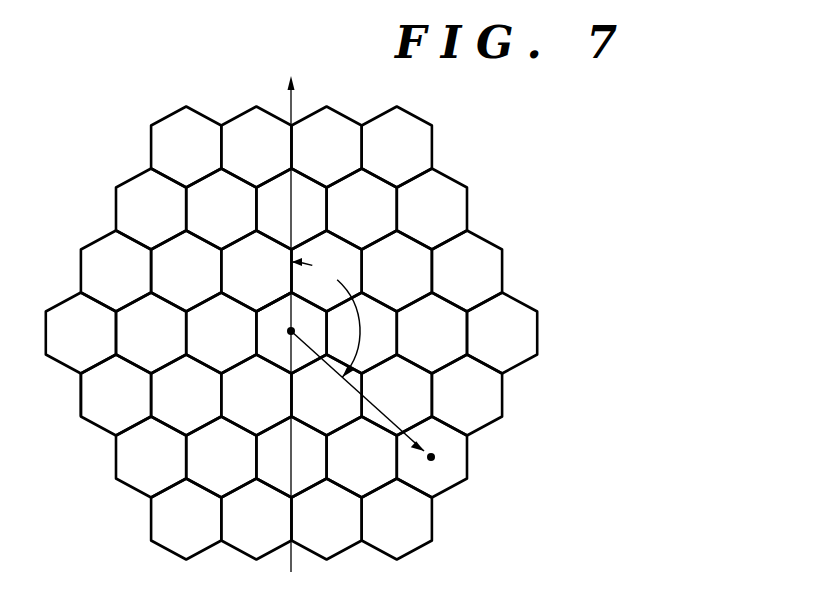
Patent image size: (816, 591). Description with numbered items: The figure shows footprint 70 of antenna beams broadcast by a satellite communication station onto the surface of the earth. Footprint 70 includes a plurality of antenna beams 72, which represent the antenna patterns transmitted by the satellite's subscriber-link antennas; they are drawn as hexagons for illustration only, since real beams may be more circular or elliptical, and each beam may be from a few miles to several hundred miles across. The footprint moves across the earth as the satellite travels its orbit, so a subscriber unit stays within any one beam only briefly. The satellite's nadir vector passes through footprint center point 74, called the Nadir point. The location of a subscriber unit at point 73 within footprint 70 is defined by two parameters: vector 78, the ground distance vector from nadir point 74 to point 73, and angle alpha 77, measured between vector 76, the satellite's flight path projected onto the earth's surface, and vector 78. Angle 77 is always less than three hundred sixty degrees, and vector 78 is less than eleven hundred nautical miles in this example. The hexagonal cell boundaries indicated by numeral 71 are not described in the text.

The footprint 70 is at (485, 239).
The hexagonal cell boundaries 71 is at (278, 310).
The antenna beams 72 is at (92, 397).
The point 73 is at (436, 458).
The nadir point 74 is at (283, 327).
The vector 76 is at (289, 103).
The angle alpha 77 is at (361, 331).
The vector 78 is at (386, 417).